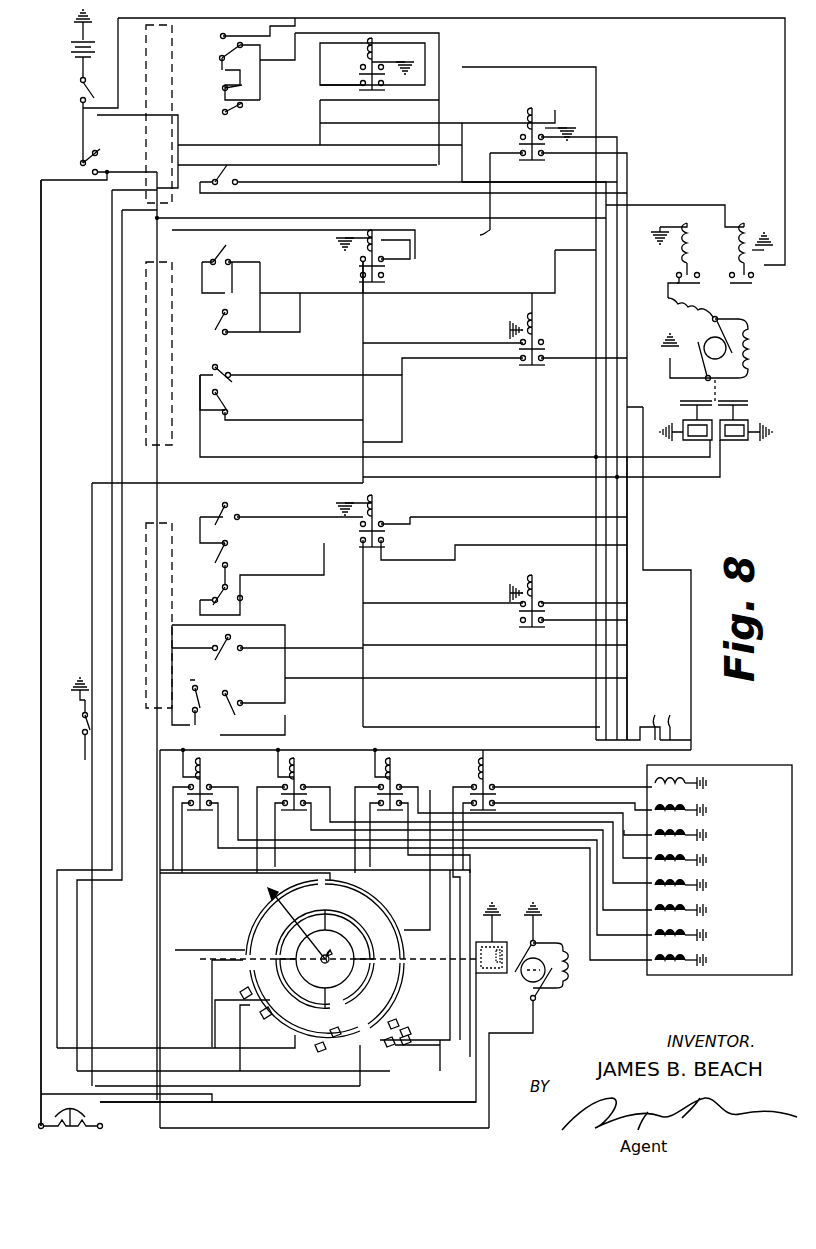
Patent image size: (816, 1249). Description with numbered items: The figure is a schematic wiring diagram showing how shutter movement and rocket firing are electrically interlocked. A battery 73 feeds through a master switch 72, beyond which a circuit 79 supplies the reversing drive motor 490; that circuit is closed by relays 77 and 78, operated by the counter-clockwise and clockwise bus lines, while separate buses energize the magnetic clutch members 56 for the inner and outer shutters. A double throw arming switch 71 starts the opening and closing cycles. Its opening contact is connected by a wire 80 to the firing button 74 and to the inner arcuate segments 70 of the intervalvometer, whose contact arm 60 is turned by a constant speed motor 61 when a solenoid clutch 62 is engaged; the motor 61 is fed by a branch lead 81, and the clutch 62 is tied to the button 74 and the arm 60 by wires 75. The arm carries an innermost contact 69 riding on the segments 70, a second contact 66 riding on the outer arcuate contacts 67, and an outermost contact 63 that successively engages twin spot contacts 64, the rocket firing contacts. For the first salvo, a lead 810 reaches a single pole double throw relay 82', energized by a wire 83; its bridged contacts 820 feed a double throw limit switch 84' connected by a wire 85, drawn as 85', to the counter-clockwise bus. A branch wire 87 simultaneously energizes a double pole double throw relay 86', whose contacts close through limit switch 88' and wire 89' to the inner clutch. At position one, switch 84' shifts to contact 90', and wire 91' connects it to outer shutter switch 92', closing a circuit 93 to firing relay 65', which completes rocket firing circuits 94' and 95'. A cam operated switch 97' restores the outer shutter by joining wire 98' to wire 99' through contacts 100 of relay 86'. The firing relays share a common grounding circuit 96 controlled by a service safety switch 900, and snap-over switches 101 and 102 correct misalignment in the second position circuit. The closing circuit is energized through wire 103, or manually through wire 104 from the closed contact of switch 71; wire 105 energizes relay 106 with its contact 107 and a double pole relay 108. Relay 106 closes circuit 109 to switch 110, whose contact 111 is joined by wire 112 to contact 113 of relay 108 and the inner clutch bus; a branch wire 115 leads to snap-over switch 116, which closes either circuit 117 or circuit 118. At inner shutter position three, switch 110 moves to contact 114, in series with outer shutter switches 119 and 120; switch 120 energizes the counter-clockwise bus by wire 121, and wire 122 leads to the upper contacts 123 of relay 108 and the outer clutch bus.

The circuit 79 is at (655, 18).
The battery 73 is at (72, 43).
The master switch 72 is at (78, 87).
The arming switch 71 is at (103, 164).
The wire 104 is at (168, 115).
The single pole double throw switch 110 is at (224, 48).
The contact 111 is at (236, 21).
The contact 114 is at (211, 66).
The wire 112 is at (245, 73).
The single pole single throw switch 119 is at (223, 88).
The switch 120 is at (265, 100).
The circuit 109 is at (287, 75).
The single pole single throw relay 106 is at (440, 55).
The contact 107 is at (355, 82).
The wire 105 is at (205, 140).
The branch wire 115 is at (368, 165).
The snap-over switch 116 is at (215, 170).
The circuit 118 is at (265, 190).
The circuit 117 is at (305, 160).
The wire 121 is at (500, 75).
The wire 122 is at (479, 92).
The double pole single throw relay 108 is at (548, 108).
The upper contacts 123 is at (515, 134).
The contact 113 is at (491, 199).
The relay 78 is at (752, 220).
The relay 77 is at (665, 290).
The reversing electric motor 490 is at (702, 338).
The magnetic clutch members 56 is at (678, 440).
The double throw limit switch 84' is at (220, 253).
The wire 85' is at (203, 280).
The contact 90' is at (240, 276).
The single pole single throw limit switch 88' is at (220, 322).
The wire 91' is at (311, 297).
The contacts 820 is at (332, 245).
The single pole double throw relay 82' is at (368, 258).
The lead 810 is at (438, 222).
The wire 85 is at (459, 271).
The branch wire 87 is at (525, 295).
The wire 89' is at (443, 327).
The contacts 100 is at (518, 375).
The double pole double throw relay 86' is at (540, 359).
The single pole double throw switch 92' is at (288, 389).
The cam operated switch 97' is at (281, 409).
The circuit 93 is at (292, 395).
The wire 99' is at (281, 416).
The wire 98' is at (355, 452).
The single pole double throw switch 101 is at (220, 596).
The single pole double throw switch 102 is at (245, 695).
The service safety switch 900 is at (90, 728).
The double pole single throw relay 65' is at (552, 864).
The common grounding circuit 96 is at (160, 775).
The rocket firing circuit 94' is at (552, 768).
The rocket firing circuit 95' is at (578, 773).
The contact arm 60 is at (325, 938).
The outermost contact 63 is at (364, 919).
The arcuate contacts 67 is at (325, 959).
The arcuate contacts 70 is at (325, 959).
The innermost contact 69 is at (325, 959).
The second contact 66 is at (300, 925).
The twin spot contacts 64 is at (325, 1019).
The solenoid clutch 62 is at (520, 935).
The constant speed motor 61 is at (532, 988).
The wires 75 is at (448, 1082).
The firing button 74 is at (70, 1126).
The wire 80 is at (41, 390).
The wire 81 is at (157, 240).
The wire 83 is at (122, 410).
The wire 103 is at (112, 258).